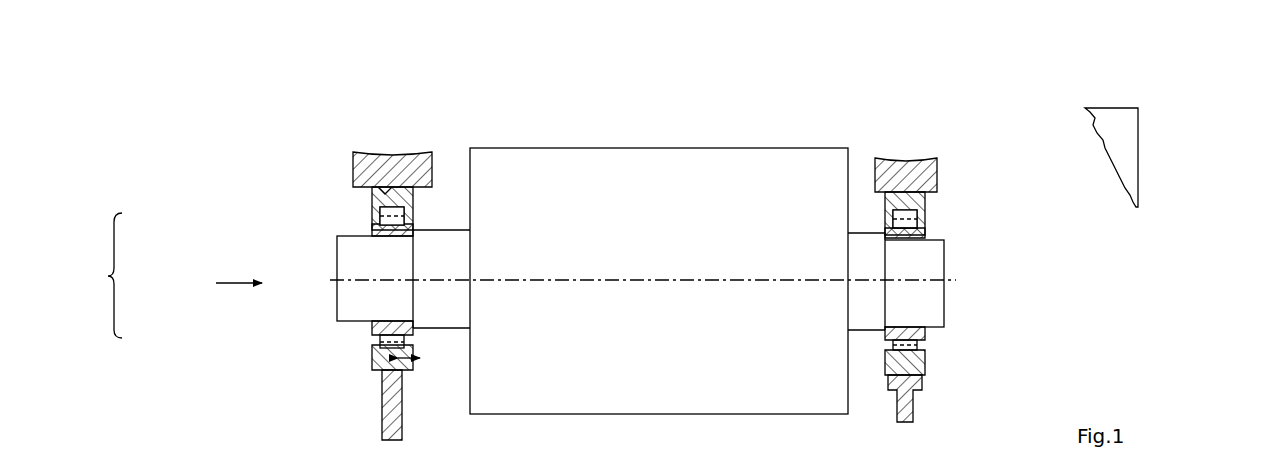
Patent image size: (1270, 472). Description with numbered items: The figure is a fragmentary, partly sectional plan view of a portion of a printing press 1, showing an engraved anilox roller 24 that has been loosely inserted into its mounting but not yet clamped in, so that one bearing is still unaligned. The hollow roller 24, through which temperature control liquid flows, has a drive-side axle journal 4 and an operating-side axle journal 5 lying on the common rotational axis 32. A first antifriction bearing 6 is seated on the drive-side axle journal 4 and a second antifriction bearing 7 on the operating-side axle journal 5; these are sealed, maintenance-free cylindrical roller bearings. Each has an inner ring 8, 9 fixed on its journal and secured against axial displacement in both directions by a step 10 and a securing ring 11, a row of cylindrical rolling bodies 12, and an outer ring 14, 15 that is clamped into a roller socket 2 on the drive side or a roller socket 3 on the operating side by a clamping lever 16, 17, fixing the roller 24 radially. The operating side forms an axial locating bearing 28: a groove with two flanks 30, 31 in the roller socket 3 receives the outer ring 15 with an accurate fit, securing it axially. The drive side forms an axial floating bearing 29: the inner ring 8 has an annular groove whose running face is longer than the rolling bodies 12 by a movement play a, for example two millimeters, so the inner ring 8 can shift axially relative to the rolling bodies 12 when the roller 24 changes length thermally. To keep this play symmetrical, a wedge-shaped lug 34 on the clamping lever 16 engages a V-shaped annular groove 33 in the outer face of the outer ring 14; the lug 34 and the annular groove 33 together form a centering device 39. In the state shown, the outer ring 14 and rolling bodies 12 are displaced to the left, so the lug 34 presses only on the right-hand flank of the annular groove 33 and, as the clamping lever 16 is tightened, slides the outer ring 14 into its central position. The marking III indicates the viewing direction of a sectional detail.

The printing press 1 is at (1175, 115).
The roller socket 2 is at (355, 160).
The roller socket 3 is at (937, 162).
The axle journal 4 is at (352, 302).
The axle journal 5 is at (945, 262).
The first antifriction bearing 6 is at (425, 212).
The second antifriction bearing 7 is at (880, 210).
The inner ring 8 is at (372, 230).
The inner ring 9 is at (930, 227).
The step 10 is at (438, 330).
The securing ring 11 is at (372, 322).
The rolling bodies 12 is at (378, 212).
The outer ring 14 is at (372, 191).
The outer ring 15 is at (930, 205).
The clamping lever 16 is at (382, 415).
The clamping lever 17 is at (915, 405).
The roller 24 is at (780, 400).
The axial locating bearing 28 is at (985, 371).
The axial floating bearing 29 is at (350, 363).
The flank 30 is at (885, 188).
The flank 31 is at (918, 190).
The rotational axis 32 is at (920, 290).
The annular groove 33 is at (581, 205).
The lug 34 is at (577, 385).
The centering device 39 is at (102, 275).
The movement play a is at (418, 365).
The section view direction III is at (222, 283).